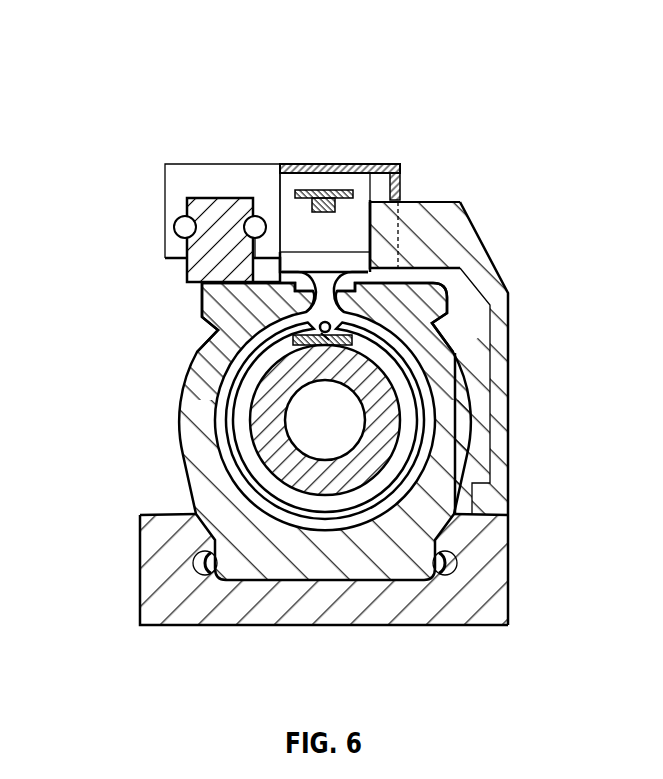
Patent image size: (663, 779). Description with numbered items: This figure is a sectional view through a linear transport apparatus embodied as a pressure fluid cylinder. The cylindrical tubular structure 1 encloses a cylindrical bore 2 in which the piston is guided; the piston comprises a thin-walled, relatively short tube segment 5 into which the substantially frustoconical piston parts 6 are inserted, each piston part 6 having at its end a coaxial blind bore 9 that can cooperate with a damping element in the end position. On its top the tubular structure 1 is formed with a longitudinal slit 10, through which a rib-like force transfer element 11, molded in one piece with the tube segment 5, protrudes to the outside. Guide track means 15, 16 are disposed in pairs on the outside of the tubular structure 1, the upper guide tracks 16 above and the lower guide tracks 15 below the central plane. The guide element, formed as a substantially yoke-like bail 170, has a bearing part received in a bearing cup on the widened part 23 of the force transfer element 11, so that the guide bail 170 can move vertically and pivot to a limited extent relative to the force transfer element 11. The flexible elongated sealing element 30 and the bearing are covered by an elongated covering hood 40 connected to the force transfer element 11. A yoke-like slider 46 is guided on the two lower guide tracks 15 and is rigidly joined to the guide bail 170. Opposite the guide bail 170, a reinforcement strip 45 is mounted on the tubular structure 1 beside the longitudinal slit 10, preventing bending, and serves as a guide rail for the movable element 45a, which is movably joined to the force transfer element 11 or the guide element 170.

The tubular structure 1 is at (433, 502).
The cylindrical bore 2 is at (222, 447).
The tube segment 5 is at (257, 360).
The piston part 6 is at (265, 395).
The blind bore 9 is at (342, 415).
The longitudinal slit 10 is at (320, 290).
The force transfer element 11 is at (355, 218).
The lower guide track 15 is at (205, 568).
The upper guide track 16 is at (212, 318).
The widened part 23 is at (400, 163).
The sealing element 30 is at (302, 182).
The covering hood 40 is at (372, 167).
The reinforcement strip 45 is at (207, 257).
The movable element 45a is at (183, 167).
The slider 46 is at (497, 608).
The guide bail 170 is at (500, 352).